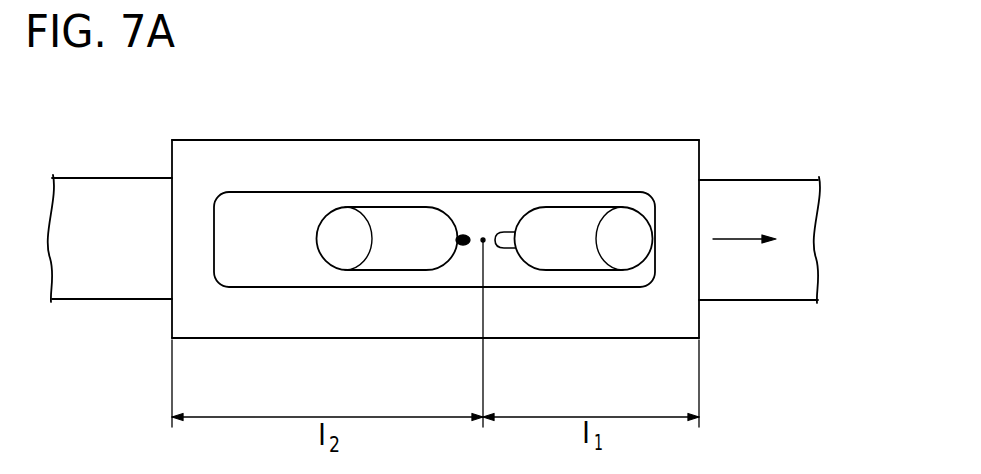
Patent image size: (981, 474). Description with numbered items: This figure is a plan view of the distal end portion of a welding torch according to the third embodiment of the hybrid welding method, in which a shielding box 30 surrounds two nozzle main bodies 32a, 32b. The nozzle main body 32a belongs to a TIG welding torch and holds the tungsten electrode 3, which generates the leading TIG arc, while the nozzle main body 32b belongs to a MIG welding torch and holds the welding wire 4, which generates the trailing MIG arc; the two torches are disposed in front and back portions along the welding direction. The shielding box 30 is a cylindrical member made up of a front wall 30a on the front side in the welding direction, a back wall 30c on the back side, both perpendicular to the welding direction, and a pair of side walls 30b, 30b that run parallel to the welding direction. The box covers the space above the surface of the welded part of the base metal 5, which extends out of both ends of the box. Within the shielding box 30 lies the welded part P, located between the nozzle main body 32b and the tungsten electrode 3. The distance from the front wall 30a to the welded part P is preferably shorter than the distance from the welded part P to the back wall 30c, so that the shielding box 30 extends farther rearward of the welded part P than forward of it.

The shielding box 30 is at (432, 231).
The front wall 30a is at (700, 232).
The side walls 30b is at (435, 138).
The back wall 30c is at (170, 238).
The base metal 5 is at (110, 182).
The nozzle main body 32a is at (567, 213).
The nozzle main body 32b is at (380, 213).
The welding wire 4 is at (462, 234).
The welded part P is at (483, 237).
The tungsten electrode 3 is at (505, 232).